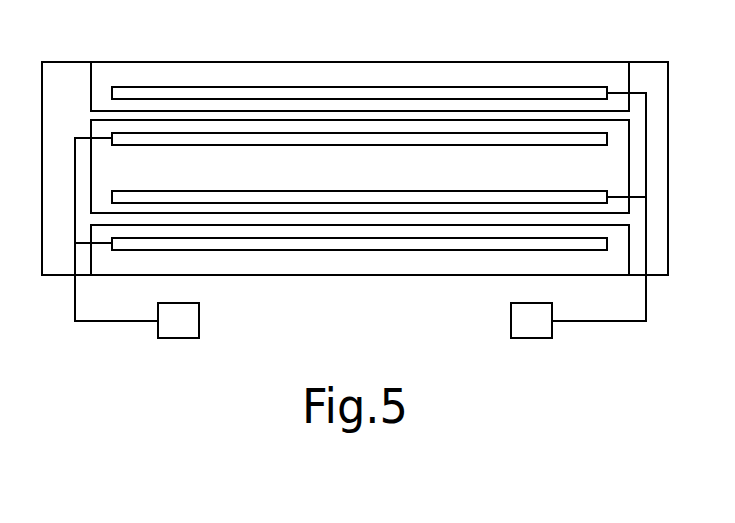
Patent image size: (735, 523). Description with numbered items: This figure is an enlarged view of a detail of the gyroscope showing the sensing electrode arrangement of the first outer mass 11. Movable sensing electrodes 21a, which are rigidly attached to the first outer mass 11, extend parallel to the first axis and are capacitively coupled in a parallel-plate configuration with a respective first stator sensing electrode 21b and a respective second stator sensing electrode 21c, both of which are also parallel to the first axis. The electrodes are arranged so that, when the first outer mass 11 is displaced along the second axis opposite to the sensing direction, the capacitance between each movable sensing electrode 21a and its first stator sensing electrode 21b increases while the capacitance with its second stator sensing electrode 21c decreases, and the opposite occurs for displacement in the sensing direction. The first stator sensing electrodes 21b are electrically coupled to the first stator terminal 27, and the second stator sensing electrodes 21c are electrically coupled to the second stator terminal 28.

The first outer mass 11 is at (57, 70).
The movable sensing electrode 21a is at (300, 116).
The first stator sensing electrode 21b is at (497, 138).
The second stator sensing electrode 21c is at (193, 88).
The first stator terminal 27 is at (172, 338).
The second stator terminal 28 is at (540, 332).